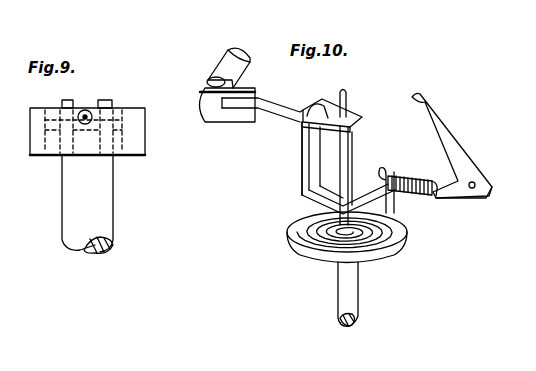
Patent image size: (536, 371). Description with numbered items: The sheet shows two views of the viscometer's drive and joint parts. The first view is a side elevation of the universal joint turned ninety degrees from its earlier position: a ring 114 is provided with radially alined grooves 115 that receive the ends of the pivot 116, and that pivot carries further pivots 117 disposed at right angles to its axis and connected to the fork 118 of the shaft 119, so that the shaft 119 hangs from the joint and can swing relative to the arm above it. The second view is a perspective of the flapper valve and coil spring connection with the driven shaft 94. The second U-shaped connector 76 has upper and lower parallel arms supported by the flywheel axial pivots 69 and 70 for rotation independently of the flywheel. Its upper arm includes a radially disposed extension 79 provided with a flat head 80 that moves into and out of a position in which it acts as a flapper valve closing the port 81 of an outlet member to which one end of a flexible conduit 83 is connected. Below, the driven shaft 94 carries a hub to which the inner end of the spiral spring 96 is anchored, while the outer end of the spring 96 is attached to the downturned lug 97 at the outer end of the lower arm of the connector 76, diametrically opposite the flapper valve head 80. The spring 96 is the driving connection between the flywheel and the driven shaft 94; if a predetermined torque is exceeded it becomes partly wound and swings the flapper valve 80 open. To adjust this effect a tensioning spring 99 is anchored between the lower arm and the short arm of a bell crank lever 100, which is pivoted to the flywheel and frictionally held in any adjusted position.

In FIG. 10, the axial pivot 69 is at (348, 98).
In FIG. 10, the axial pivot 70 is at (351, 155).
In FIG. 10, the second U-shaped connector 76 is at (310, 152).
In FIG. 10, the radially disposed extension 79 is at (285, 101).
In FIG. 10, the flat head 80 is at (210, 110).
In FIG. 10, the port 81 is at (236, 84).
In FIG. 10, the flexible conduit 83 is at (228, 64).
In FIG. 10, the driven shaft 94 is at (348, 293).
In FIG. 10, the spiral spring 96 is at (312, 255).
In FIG. 10, the downturned lug 97 is at (393, 208).
In FIG. 10, the tensioning spring 99 is at (423, 176).
In FIG. 10, the bell crank lever 100 is at (448, 143).
In FIG. 9, the ring 114 is at (36, 142).
In FIG. 9, the radially alined grooves 115 is at (78, 147).
In FIG. 9, the pivot 116 is at (79, 160).
In FIG. 9, the pivots 117 is at (112, 104).
In FIG. 9, the fork 118 is at (66, 100).
In FIG. 9, the shaft 119 is at (73, 214).